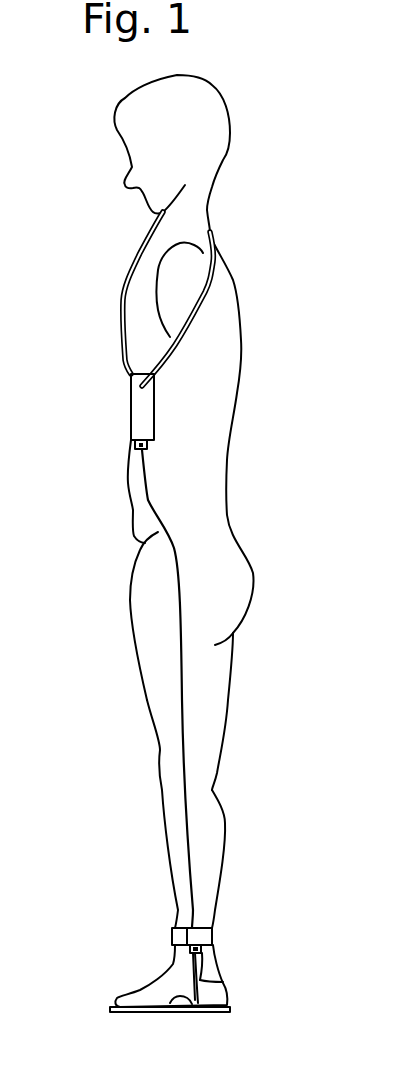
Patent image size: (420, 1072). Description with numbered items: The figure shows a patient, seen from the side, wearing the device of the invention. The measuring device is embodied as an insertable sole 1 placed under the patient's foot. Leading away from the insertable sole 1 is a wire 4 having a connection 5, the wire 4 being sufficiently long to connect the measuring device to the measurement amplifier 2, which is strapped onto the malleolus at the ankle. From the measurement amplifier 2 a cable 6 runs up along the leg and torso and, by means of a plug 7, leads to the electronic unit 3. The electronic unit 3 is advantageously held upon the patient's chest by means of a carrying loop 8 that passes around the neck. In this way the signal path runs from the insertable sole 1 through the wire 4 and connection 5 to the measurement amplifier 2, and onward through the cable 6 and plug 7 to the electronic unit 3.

The insertable sole 1 is at (180, 1012).
The measurement amplifier 2 is at (183, 936).
The electronic unit 3 is at (140, 413).
The wire 4 is at (200, 980).
The connection 5 is at (200, 952).
The cable 6 is at (180, 718).
The plug 7 is at (142, 450).
The carrying loop 8 is at (140, 253).